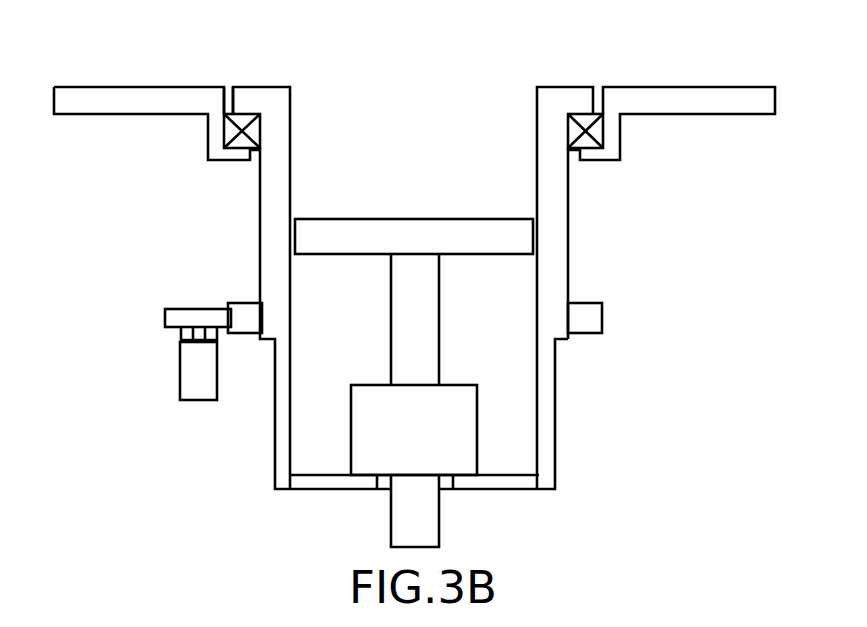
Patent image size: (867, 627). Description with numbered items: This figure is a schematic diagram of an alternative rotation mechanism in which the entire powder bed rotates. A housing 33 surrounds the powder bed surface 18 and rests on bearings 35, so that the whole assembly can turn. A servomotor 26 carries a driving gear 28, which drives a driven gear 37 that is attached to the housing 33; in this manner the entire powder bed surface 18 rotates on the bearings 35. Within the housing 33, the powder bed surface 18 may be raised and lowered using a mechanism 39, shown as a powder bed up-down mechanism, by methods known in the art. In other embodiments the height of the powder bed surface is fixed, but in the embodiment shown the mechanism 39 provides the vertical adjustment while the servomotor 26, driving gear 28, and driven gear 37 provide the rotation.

The powder bed surface 18 is at (517, 233).
The servomotor 26 is at (197, 374).
The driving gear 28 is at (178, 316).
The housing 33 is at (247, 98).
The bearings 35 is at (241, 146).
The driven gear 37 is at (581, 316).
The mechanism 39 is at (470, 430).